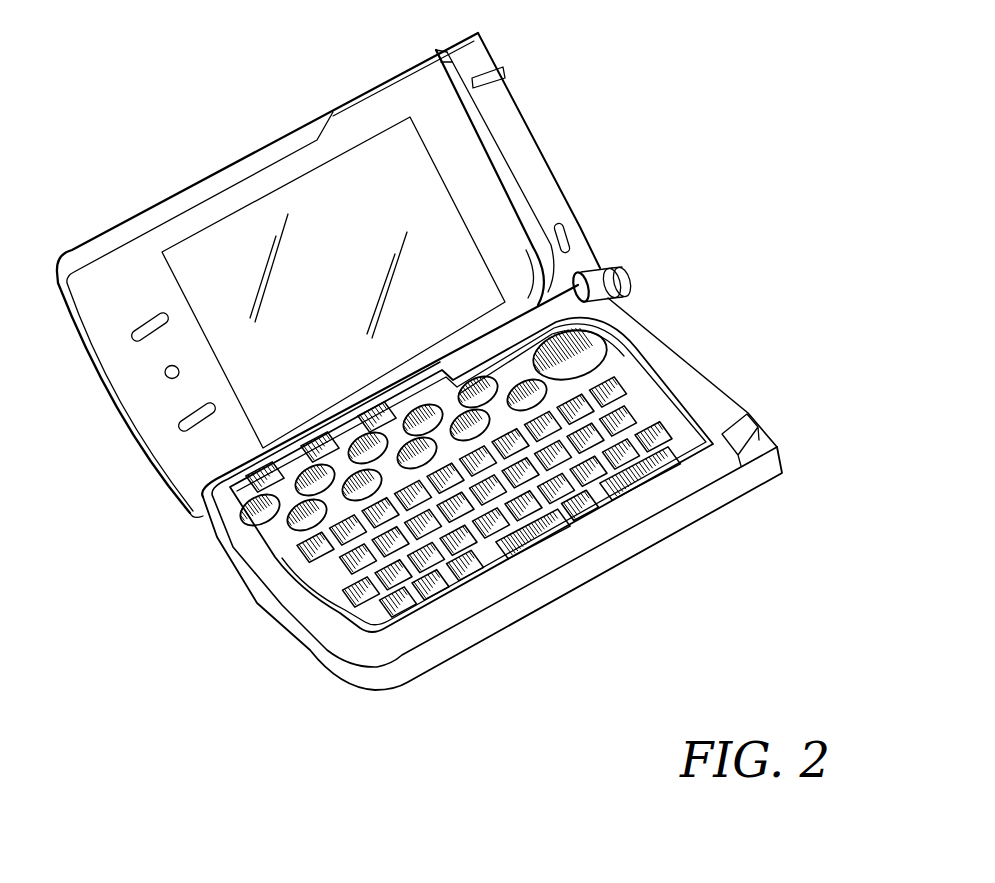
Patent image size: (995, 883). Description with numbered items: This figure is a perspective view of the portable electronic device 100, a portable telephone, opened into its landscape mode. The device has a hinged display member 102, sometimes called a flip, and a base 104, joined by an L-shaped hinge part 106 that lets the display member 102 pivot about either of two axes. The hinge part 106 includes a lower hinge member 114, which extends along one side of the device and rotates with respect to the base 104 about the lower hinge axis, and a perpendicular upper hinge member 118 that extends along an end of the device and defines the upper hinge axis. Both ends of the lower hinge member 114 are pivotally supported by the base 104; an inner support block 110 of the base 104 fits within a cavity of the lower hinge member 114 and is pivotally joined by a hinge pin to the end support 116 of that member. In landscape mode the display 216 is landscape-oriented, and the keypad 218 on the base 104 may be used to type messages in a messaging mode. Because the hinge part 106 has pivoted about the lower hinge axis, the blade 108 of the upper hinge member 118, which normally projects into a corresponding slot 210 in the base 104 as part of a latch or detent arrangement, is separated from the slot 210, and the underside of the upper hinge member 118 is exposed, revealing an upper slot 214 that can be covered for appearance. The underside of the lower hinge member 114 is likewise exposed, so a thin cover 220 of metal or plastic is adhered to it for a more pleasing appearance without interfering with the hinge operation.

The portable electronic device 100 is at (748, 122).
The display member 102 is at (92, 356).
The base 104 is at (235, 566).
The hinge part 106 is at (462, 44).
The blade 108 is at (527, 55).
The inner support block 110 is at (606, 270).
The lower hinge member 114 is at (455, 352).
The end support 116 is at (625, 284).
The upper hinge member 118 is at (523, 133).
The slot 210 is at (732, 430).
The upper slot 214 is at (571, 232).
The display 216 is at (313, 197).
The keypad 218 is at (437, 587).
The cover 220 is at (510, 326).